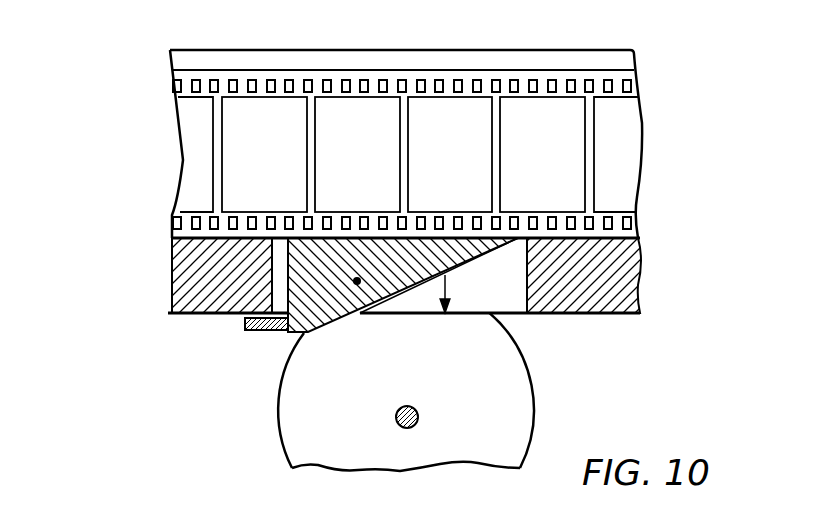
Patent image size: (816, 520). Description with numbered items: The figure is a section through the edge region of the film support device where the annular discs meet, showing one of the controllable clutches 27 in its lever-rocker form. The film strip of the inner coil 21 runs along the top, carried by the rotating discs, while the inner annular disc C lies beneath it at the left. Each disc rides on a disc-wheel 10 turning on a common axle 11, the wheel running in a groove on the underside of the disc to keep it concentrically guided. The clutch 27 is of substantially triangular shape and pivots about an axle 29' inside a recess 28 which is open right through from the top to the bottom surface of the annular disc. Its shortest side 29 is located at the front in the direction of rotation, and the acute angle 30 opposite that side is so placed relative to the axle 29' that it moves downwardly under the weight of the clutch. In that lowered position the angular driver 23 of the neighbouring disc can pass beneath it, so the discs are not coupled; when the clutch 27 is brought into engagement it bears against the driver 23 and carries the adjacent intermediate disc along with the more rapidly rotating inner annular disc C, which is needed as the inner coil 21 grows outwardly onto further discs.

The inner film coil 21 is at (172, 107).
The shortest side 29 is at (200, 275).
The axle 29' is at (403, 300).
The recess 28 is at (507, 295).
The acute angle 30 is at (530, 243).
The angular driver 23 is at (245, 328).
The controllable clutch 27 is at (295, 331).
The disc-wheel 10 is at (278, 433).
The axle 11 is at (419, 418).
The inner annular disc C is at (172, 259).